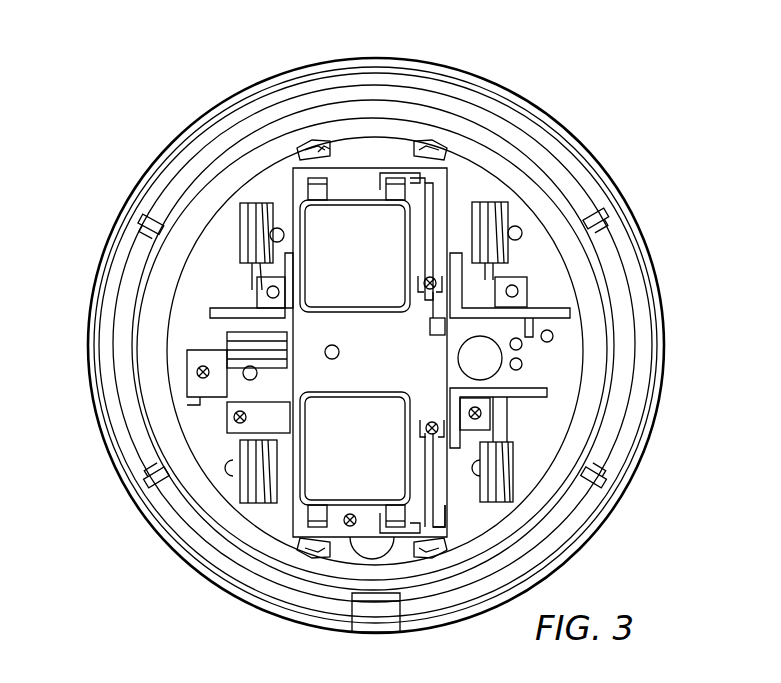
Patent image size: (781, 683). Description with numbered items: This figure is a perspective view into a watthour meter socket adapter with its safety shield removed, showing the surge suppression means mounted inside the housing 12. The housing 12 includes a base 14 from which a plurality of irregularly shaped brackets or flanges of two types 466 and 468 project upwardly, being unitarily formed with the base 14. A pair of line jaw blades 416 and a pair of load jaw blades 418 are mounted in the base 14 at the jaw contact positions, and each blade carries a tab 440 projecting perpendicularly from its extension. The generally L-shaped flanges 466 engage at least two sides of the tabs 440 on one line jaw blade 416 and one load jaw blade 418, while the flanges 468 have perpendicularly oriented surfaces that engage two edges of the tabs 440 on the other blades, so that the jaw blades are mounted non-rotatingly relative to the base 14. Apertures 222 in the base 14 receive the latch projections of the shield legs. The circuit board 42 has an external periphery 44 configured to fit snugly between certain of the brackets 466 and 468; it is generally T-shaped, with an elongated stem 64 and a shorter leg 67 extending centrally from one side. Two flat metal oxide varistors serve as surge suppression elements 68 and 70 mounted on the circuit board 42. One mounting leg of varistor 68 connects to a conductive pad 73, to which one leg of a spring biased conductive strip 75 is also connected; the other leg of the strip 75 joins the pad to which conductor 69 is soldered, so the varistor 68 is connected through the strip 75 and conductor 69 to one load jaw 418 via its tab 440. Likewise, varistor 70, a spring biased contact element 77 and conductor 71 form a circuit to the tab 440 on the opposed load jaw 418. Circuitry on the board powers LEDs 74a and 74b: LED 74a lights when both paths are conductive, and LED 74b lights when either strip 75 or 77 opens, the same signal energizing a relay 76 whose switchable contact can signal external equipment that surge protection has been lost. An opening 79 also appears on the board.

The housing 12 is at (187, 118).
The base 14 is at (262, 192).
The aperture 222 is at (300, 150).
The conductive terminal or pad 73 is at (422, 150).
The external periphery 44 is at (455, 212).
The surge suppression element 68 is at (390, 262).
The surge suppression element 70 is at (392, 458).
The conductor 69 is at (385, 352).
The spring biased electrically conductive strip 75 is at (450, 183).
The circuit board 42 is at (452, 173).
The stem 64 is at (453, 192).
The relay or circuit 76 is at (430, 325).
The conductor 71 is at (440, 366).
The line jaw blade 416 is at (240, 207).
The flange 466 is at (217, 310).
The flange 468 is at (457, 280).
The leg 67 is at (517, 320).
The spring biased contact element 77 is at (432, 507).
The tab 440 is at (230, 352).
The load jaw blade 418 is at (257, 498).
The opening 79 is at (490, 370).
The LED 74a is at (522, 344).
The LED 74b is at (522, 364).